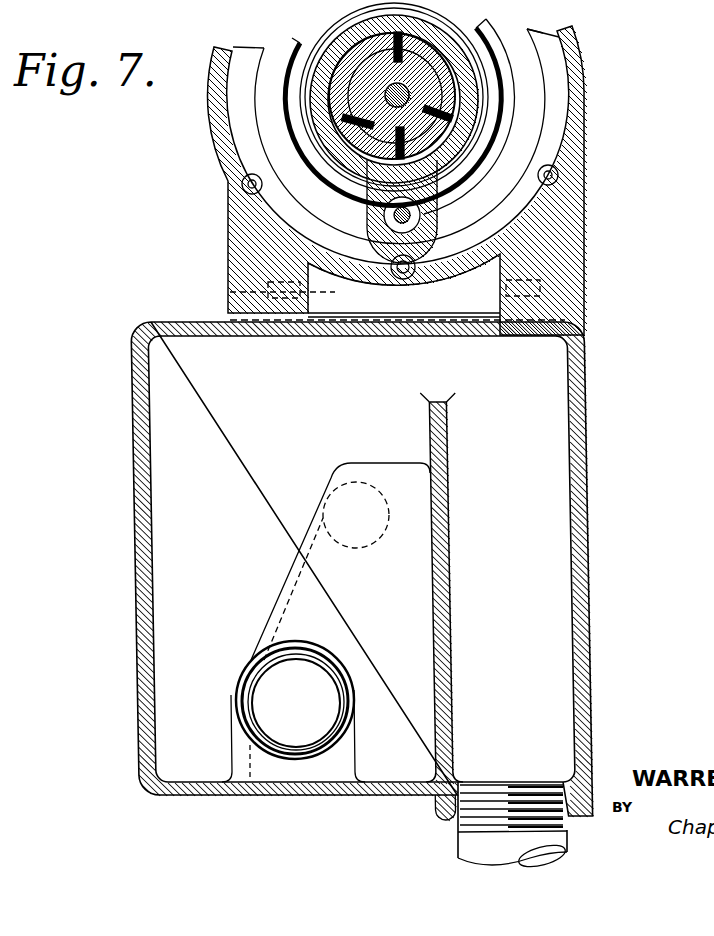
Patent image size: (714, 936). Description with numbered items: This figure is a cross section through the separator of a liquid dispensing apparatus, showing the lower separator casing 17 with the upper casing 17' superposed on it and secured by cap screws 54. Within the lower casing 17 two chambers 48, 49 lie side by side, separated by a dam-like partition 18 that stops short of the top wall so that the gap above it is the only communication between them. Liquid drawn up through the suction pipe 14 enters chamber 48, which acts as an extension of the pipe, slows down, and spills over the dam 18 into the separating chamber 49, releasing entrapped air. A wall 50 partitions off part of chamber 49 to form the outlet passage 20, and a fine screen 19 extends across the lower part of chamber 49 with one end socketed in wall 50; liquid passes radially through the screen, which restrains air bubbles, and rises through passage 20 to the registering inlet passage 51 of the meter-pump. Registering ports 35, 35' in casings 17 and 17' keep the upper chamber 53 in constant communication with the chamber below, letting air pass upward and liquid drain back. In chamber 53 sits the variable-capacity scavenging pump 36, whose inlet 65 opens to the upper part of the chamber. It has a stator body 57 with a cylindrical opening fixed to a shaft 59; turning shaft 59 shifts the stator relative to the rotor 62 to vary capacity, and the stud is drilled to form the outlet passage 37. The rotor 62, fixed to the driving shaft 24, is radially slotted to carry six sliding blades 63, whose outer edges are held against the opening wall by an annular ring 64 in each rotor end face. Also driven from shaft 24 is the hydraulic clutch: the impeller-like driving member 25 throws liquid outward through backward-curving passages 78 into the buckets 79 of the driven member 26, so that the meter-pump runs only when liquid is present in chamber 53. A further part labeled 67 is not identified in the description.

The suction pipe 14 is at (470, 848).
The separator casing 17 is at (390, 569).
The upper casing 17' is at (419, 181).
The dam-like partition 18 is at (449, 598).
The fine screen 19 is at (334, 664).
The passage 20 is at (318, 614).
The shaft 24 is at (484, 30).
The driving member 25 is at (573, 62).
The driven member 26 is at (498, 136).
The port 35 is at (340, 349).
The port 35' is at (294, 347).
The scavenging pump 36 is at (490, 108).
The passage 37 is at (421, 232).
The chamber 48 is at (511, 660).
The separator chamber 49 is at (221, 502).
The wall 50 is at (284, 587).
The inlet passage 51 is at (367, 548).
The upper chamber 53 is at (562, 97).
The cap screws 54 is at (545, 272).
The stator body 57 is at (312, 98).
The shaft 59 is at (382, 245).
The rotor 62 is at (396, 145).
The blades 63 is at (406, 145).
The annular ring 64 is at (395, 31).
The pump inlet 65 is at (441, 31).
The ring segment 67 is at (704, 8).
The passages 78 is at (232, 40).
The buckets 79 is at (212, 2).